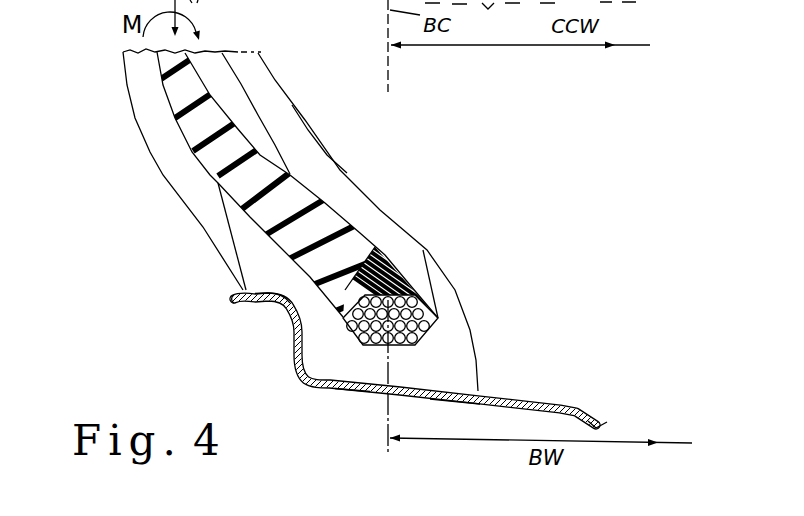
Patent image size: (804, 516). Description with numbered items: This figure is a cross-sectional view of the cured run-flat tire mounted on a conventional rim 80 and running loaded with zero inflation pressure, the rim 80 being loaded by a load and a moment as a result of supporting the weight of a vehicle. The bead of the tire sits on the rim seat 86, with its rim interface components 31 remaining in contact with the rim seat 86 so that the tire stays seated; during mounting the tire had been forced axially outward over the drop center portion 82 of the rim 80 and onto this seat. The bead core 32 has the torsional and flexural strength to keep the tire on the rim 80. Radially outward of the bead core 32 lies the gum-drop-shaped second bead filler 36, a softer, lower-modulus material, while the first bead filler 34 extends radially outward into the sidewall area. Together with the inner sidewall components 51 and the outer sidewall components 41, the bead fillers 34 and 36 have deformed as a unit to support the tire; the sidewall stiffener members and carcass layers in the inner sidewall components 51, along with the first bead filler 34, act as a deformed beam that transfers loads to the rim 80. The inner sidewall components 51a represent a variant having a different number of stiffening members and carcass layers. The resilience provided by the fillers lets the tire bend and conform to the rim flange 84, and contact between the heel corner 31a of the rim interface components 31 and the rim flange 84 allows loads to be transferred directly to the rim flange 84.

The rim interface components 31 is at (335, 356).
The heel corner 31a is at (243, 289).
The bead core 32 is at (428, 330).
The first bead filler 34 is at (268, 190).
The second bead filler 36 is at (385, 265).
The outer sidewall components 41 is at (147, 155).
The inner sidewall components 51 is at (270, 93).
The inner sidewall components 51a is at (314, 117).
The rim 80 is at (446, 405).
The drop center portion 82 is at (587, 408).
The rim flange 84 is at (258, 307).
The rim seat 86 is at (360, 389).